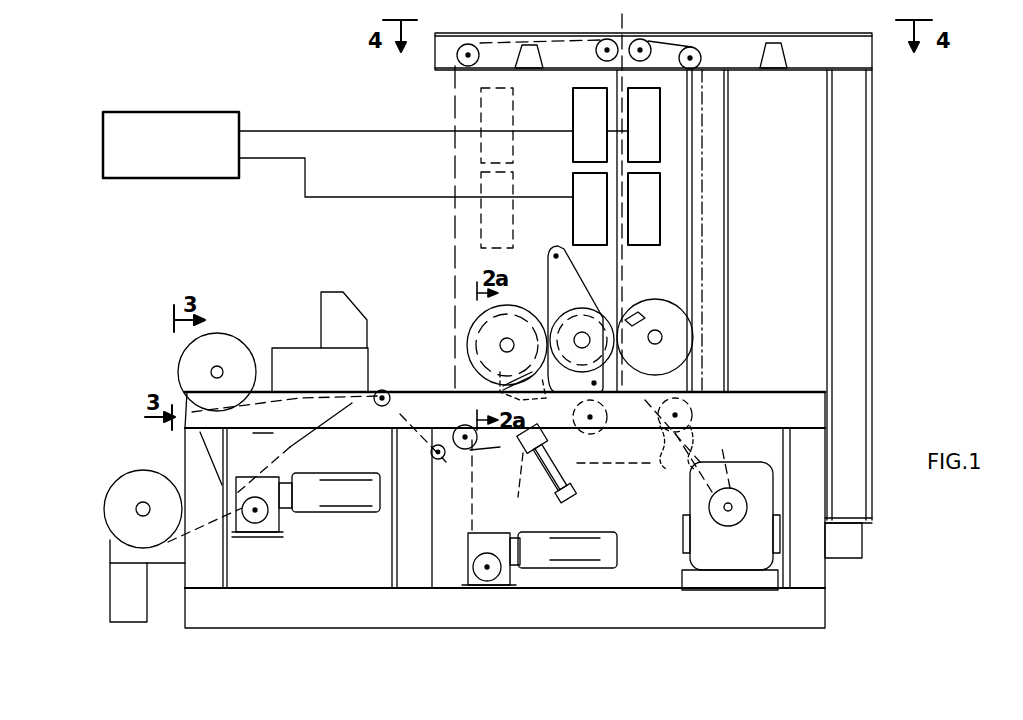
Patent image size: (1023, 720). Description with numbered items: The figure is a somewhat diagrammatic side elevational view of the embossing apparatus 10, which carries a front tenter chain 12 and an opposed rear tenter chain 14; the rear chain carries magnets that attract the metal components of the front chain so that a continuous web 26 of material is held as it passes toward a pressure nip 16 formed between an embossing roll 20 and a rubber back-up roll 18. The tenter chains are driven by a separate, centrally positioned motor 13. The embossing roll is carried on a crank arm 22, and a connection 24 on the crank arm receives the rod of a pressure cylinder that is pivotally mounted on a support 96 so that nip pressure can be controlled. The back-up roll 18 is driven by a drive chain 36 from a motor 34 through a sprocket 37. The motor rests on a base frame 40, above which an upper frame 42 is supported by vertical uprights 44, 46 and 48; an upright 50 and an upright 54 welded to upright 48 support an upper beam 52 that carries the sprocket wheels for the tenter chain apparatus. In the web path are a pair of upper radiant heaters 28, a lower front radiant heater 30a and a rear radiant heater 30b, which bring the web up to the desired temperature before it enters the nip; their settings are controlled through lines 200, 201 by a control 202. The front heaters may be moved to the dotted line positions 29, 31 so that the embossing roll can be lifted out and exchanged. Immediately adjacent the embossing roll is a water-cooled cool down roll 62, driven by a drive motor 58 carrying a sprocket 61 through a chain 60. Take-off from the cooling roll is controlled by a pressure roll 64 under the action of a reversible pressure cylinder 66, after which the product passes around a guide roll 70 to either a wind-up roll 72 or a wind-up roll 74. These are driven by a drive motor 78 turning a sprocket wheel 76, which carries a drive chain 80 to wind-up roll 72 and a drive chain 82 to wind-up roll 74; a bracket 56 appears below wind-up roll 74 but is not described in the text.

The apparatus 10 is at (194, 60).
The front tenter chain 12 is at (455, 262).
The motor 13 is at (630, 464).
The rear tenter chain 14 is at (704, 180).
The pressure nip 16 is at (646, 318).
The back-up roll 18 is at (680, 328).
The embossing roll 20 is at (558, 330).
The crank arm 22 is at (620, 310).
The connection 24 is at (556, 266).
The continuous web 26 is at (620, 26).
The upper radiant heaters 28 is at (638, 110).
The dotted line position 29 is at (482, 108).
The lower front radiant heater 30a is at (574, 218).
The rear radiant heater 30b is at (650, 212).
The dotted line position 31 is at (490, 220).
The motor 34 is at (790, 502).
The drive chain 36 is at (730, 456).
The sprocket 37 is at (730, 518).
The base frame 40 is at (626, 600).
The upper frame 42 is at (826, 404).
The vertical upright 44 is at (210, 560).
The vertical upright 46 is at (394, 570).
The vertical upright 48 is at (808, 562).
The upright 50 is at (842, 156).
The upper beam 52 is at (732, 40).
The upright 54 is at (726, 118).
The bracket 56 is at (112, 582).
The drive motor 58 is at (562, 548).
The chain 60 is at (500, 536).
The sprocket 61 is at (462, 564).
The cool down roll 62 is at (486, 336).
The pressure roll 64 is at (508, 400).
The reversible pressure cylinder 66 is at (548, 452).
The guide roll 70 is at (390, 392).
The wind-up roll 72 is at (226, 346).
The wind-up roll 74 is at (130, 490).
The sprocket wheel 76 is at (266, 514).
The drive motor 78 is at (348, 505).
The drive chain 80 is at (258, 456).
The drive chain 82 is at (214, 486).
The support 96 is at (338, 304).
The line 200 is at (320, 134).
The line 201 is at (342, 197).
The control 202 is at (172, 120).